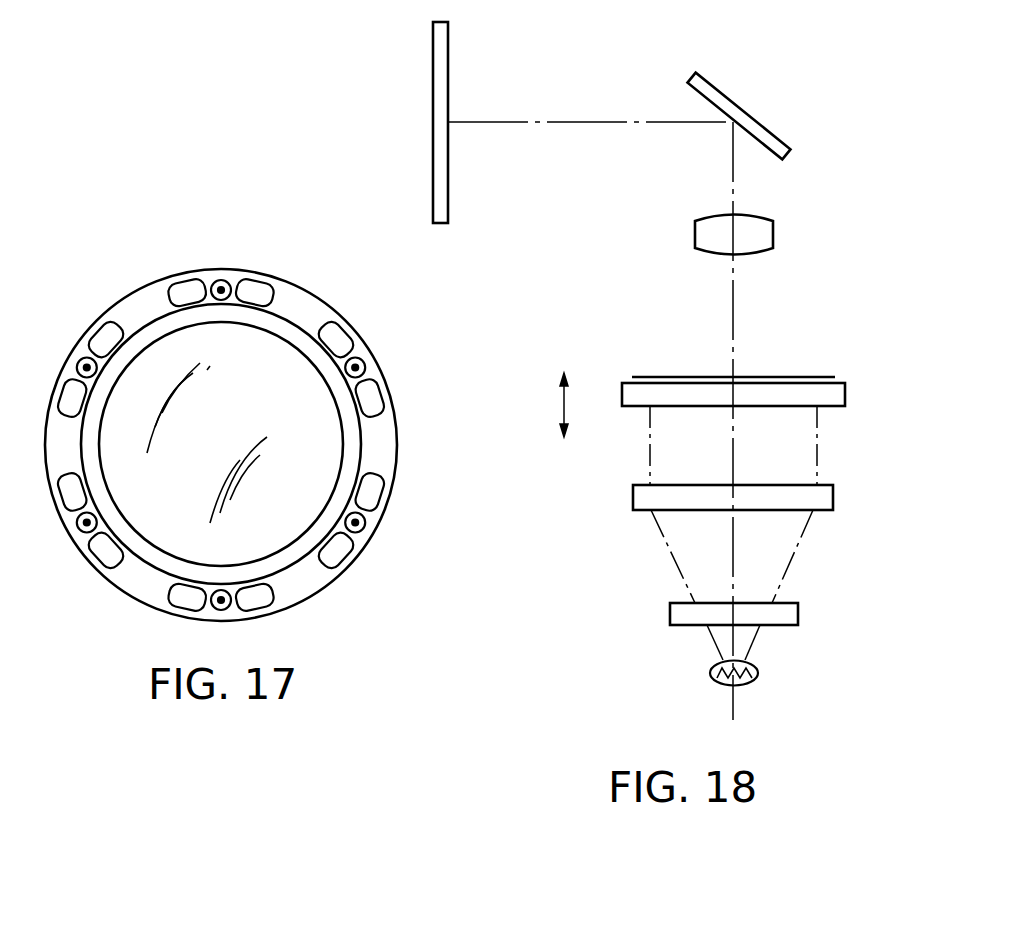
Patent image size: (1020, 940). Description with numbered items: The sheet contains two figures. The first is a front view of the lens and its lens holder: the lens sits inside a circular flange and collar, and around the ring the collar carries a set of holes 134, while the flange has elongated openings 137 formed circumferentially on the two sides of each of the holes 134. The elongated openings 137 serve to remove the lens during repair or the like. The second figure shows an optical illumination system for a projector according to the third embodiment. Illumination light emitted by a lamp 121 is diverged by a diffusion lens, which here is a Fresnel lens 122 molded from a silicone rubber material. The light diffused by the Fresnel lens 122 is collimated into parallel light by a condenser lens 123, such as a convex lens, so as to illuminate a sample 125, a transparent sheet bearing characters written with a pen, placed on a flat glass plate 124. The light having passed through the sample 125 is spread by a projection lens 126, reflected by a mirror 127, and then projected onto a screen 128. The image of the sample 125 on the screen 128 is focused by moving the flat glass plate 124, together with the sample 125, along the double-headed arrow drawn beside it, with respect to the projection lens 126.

In FIG. 18, the lamp 121 is at (752, 683).
In FIG. 18, the Fresnel lens 122 is at (798, 612).
In FIG. 18, the condenser lens 123 is at (833, 500).
In FIG. 18, the flat glass plate 124 is at (845, 398).
In FIG. 18, the sample 125 is at (818, 375).
In FIG. 18, the projection lens 126 is at (773, 232).
In FIG. 18, the mirror 127 is at (777, 135).
In FIG. 18, the screen 128 is at (448, 85).
In FIG. 17, the holes 134 is at (221, 280).
In FIG. 17, the elongated openings 137 is at (261, 283).